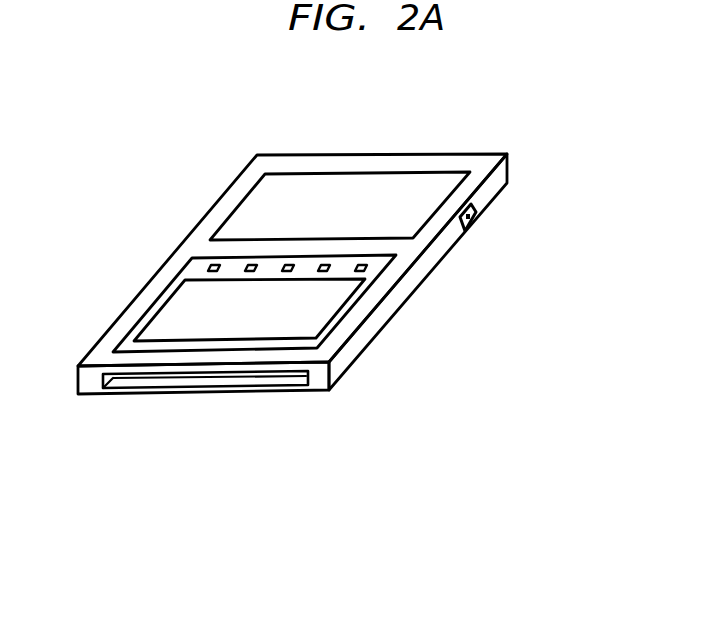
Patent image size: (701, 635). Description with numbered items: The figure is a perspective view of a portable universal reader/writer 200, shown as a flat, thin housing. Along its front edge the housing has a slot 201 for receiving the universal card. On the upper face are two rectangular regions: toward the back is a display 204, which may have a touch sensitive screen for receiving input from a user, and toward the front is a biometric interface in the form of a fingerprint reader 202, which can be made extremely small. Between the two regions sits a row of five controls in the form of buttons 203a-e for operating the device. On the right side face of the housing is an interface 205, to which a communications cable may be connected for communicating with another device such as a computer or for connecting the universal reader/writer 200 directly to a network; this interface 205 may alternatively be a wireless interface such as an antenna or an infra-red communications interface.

The universal reader/writer 200 is at (388, 153).
The slot 201 is at (194, 381).
The fingerprint reader 202 is at (166, 305).
The buttons 203a-e is at (196, 270).
The display 204 is at (242, 200).
The interface 205 is at (476, 222).